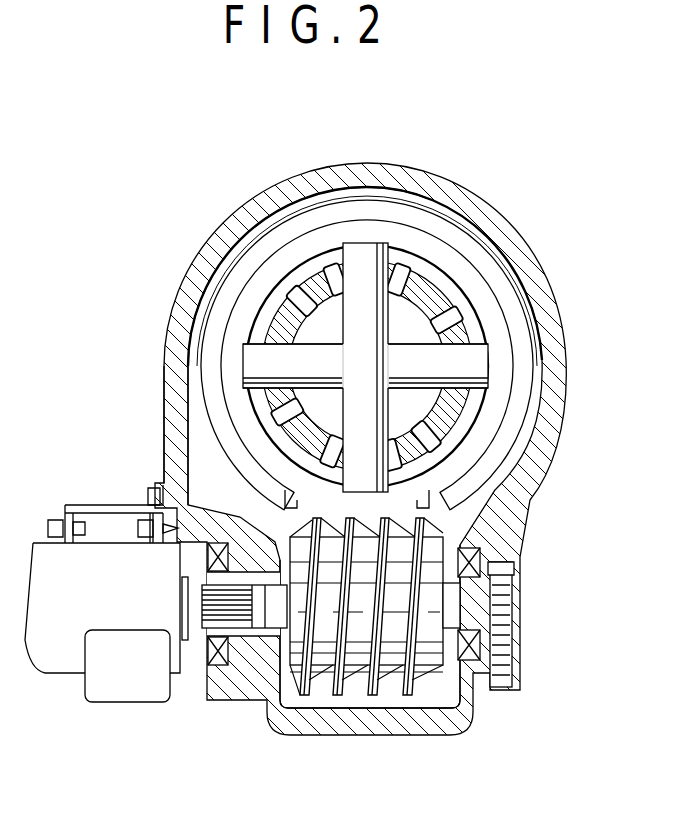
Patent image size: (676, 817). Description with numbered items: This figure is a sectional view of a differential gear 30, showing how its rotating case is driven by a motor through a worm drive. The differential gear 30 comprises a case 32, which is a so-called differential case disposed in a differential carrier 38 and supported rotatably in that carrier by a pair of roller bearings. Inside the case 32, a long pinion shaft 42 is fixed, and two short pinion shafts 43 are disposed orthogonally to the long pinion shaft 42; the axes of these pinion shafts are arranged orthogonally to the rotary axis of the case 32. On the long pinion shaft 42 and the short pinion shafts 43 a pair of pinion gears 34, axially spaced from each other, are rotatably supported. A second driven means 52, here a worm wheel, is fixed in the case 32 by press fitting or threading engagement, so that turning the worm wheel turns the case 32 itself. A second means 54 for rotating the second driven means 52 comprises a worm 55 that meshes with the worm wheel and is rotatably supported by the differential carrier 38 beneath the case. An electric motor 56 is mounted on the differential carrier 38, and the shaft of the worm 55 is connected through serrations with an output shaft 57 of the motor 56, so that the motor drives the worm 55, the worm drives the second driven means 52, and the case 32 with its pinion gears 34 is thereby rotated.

The differential gear 30 is at (478, 715).
The case 32 is at (277, 287).
The pinion gears 34 is at (395, 260).
The differential carrier 38 is at (176, 413).
The long pinion shaft 42 is at (397, 257).
The short pinion shafts 43 is at (260, 348).
The second driven means 52 is at (527, 347).
The second means for rotating the second driven means 54 is at (285, 678).
The worm 55 is at (345, 680).
The electric motor 56 is at (62, 658).
The output shaft 57 is at (193, 647).